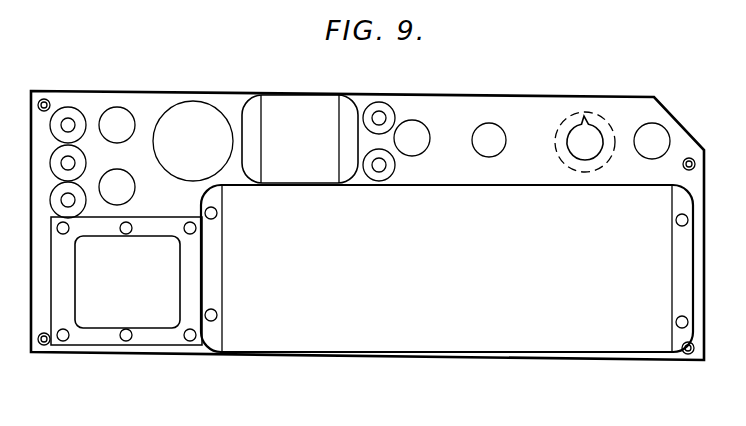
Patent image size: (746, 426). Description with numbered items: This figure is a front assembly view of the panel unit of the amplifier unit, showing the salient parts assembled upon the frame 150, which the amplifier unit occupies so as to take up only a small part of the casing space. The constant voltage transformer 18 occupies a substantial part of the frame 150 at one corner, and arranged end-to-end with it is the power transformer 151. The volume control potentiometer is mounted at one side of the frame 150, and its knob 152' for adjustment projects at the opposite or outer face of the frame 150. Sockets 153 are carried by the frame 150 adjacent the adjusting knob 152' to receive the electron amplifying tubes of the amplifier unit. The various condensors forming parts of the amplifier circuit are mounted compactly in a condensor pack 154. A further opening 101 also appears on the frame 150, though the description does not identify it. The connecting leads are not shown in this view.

The frame 150 is at (540, 112).
The condensor pack 154 is at (197, 118).
The rounded rectangular opening 101 is at (291, 118).
The sockets 153 is at (481, 125).
The knob 152' is at (602, 121).
The power transformer 151 is at (155, 317).
The constant voltage transformer 18 is at (625, 345).